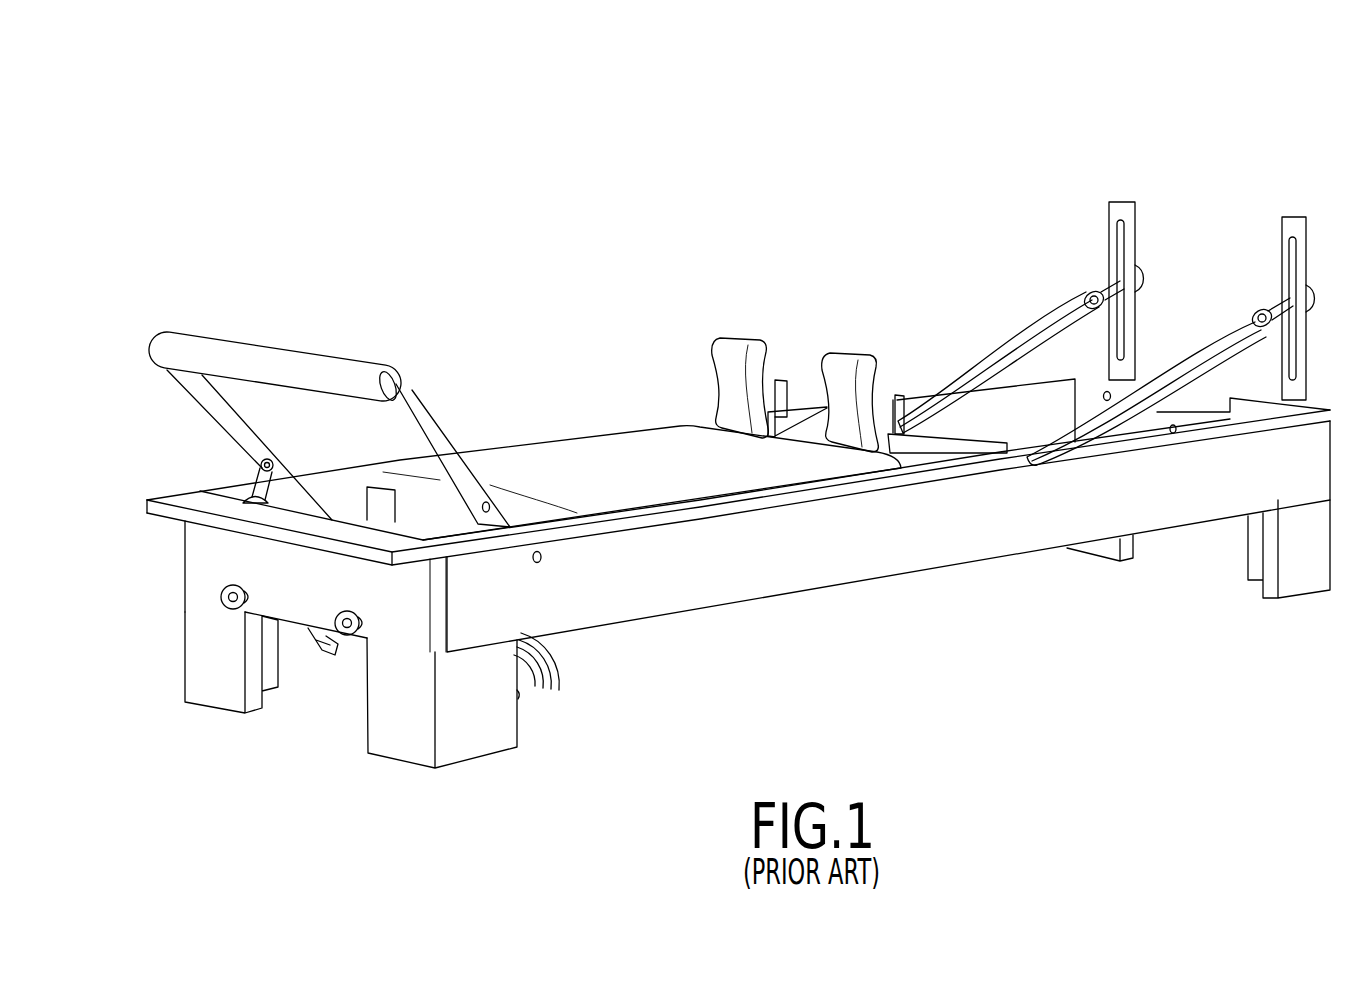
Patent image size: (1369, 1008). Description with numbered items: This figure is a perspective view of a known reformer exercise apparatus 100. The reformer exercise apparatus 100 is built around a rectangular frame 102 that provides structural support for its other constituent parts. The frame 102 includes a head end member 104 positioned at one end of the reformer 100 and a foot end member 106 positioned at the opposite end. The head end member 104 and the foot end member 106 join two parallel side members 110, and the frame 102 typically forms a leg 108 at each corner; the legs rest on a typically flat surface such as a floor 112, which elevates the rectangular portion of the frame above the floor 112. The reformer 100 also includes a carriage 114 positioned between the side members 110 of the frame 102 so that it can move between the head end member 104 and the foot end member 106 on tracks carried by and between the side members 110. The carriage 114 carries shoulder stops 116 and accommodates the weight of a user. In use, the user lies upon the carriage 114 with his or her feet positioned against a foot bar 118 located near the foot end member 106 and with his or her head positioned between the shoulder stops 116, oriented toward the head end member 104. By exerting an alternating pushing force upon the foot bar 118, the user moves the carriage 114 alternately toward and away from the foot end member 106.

The reformer exercise apparatus 100 is at (192, 97).
The frame 102 is at (800, 596).
The head end member 104 is at (1120, 397).
The foot end member 106 is at (215, 553).
The leg 108 is at (225, 693).
The side members 110 is at (1020, 417).
The floor 112 is at (652, 738).
The carriage 114 is at (413, 517).
The shoulder stops 116 is at (843, 365).
The foot bar 118 is at (307, 350).